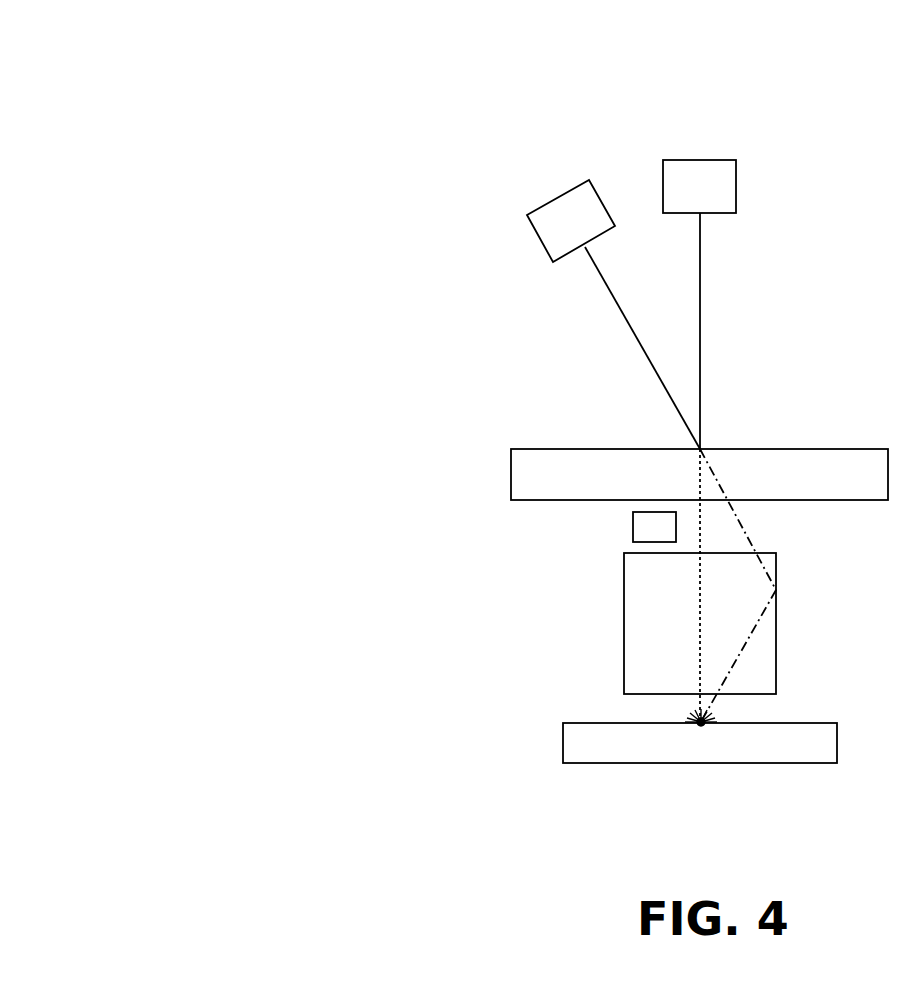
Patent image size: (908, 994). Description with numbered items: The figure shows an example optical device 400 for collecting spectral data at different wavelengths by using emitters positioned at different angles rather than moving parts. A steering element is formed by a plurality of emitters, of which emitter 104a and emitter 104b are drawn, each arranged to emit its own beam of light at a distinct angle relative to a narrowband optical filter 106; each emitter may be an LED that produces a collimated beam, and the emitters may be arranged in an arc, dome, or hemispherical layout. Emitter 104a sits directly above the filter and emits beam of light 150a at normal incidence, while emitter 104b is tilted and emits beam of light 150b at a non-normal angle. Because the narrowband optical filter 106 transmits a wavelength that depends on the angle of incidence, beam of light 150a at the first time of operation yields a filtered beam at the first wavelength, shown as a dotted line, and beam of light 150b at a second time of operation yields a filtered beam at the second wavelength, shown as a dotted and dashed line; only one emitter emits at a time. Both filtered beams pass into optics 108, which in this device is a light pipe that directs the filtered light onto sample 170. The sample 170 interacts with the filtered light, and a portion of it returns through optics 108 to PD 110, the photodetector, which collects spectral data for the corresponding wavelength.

The optical device 400 is at (183, 36).
The emitter 104a is at (700, 160).
The emitter 104b is at (553, 181).
The beam of light 150a is at (700, 303).
The beam of light 150b is at (629, 323).
The narrowband optical filter 106 is at (572, 486).
The PD 110 is at (633, 533).
The optics 108 is at (675, 586).
The sample 170 is at (722, 752).